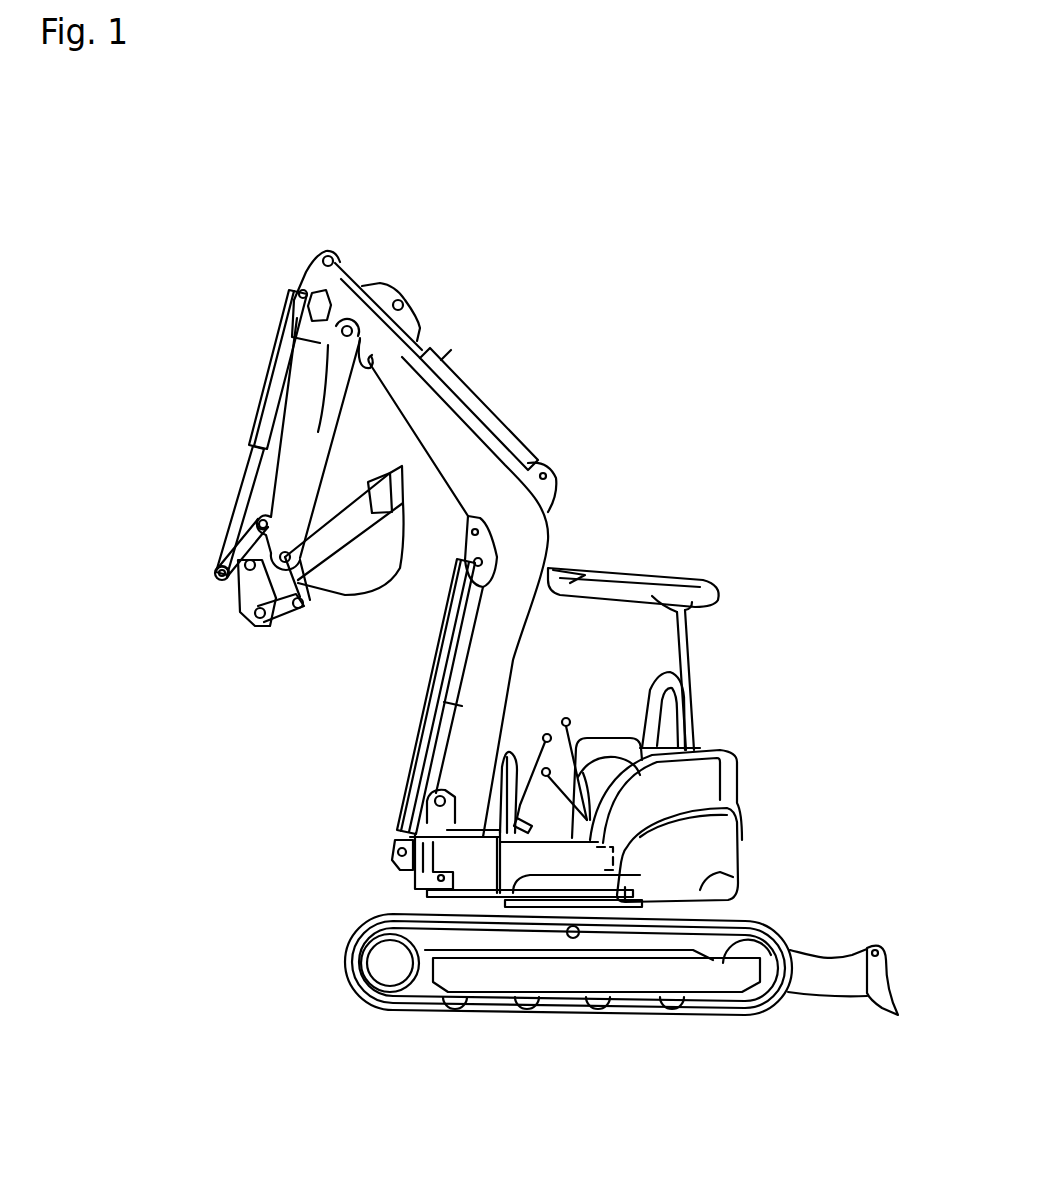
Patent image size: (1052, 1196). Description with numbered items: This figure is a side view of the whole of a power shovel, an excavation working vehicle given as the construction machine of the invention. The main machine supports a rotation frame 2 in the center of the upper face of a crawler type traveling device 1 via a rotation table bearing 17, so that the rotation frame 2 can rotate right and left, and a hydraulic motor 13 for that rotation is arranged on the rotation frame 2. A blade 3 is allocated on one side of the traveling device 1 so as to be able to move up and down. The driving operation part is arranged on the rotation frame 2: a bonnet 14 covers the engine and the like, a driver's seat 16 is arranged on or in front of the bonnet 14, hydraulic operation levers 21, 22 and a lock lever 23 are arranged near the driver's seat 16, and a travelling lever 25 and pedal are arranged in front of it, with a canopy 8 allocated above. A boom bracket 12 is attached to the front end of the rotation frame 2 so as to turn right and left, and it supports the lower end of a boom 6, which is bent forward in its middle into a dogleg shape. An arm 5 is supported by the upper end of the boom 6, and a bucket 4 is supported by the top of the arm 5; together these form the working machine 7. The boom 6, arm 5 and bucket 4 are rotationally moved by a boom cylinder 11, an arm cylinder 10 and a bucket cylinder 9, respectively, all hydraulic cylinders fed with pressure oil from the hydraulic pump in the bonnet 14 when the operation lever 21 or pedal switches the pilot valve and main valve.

The crawler type traveling device 1 is at (318, 966).
The rotation frame 2 is at (556, 880).
The blade 3 is at (826, 980).
The bucket 4 is at (372, 580).
The arm 5 is at (290, 457).
The boom 6 is at (541, 538).
The working machine 7 is at (497, 245).
The canopy 8 is at (702, 578).
The bucket cylinder 9 is at (262, 412).
The arm cylinder 10 is at (502, 437).
The boom cylinder 11 is at (418, 762).
The boom bracket 12 is at (417, 878).
The hydraulic motor 13 is at (627, 893).
The bonnet 14 is at (707, 788).
The driver's seat 16 is at (657, 722).
The rotation table bearing 17 is at (537, 902).
The hydraulic operation lever 21 is at (567, 723).
The hydraulic operation lever 22 is at (564, 794).
The lock lever 23 is at (552, 780).
The travelling lever 25 is at (547, 735).